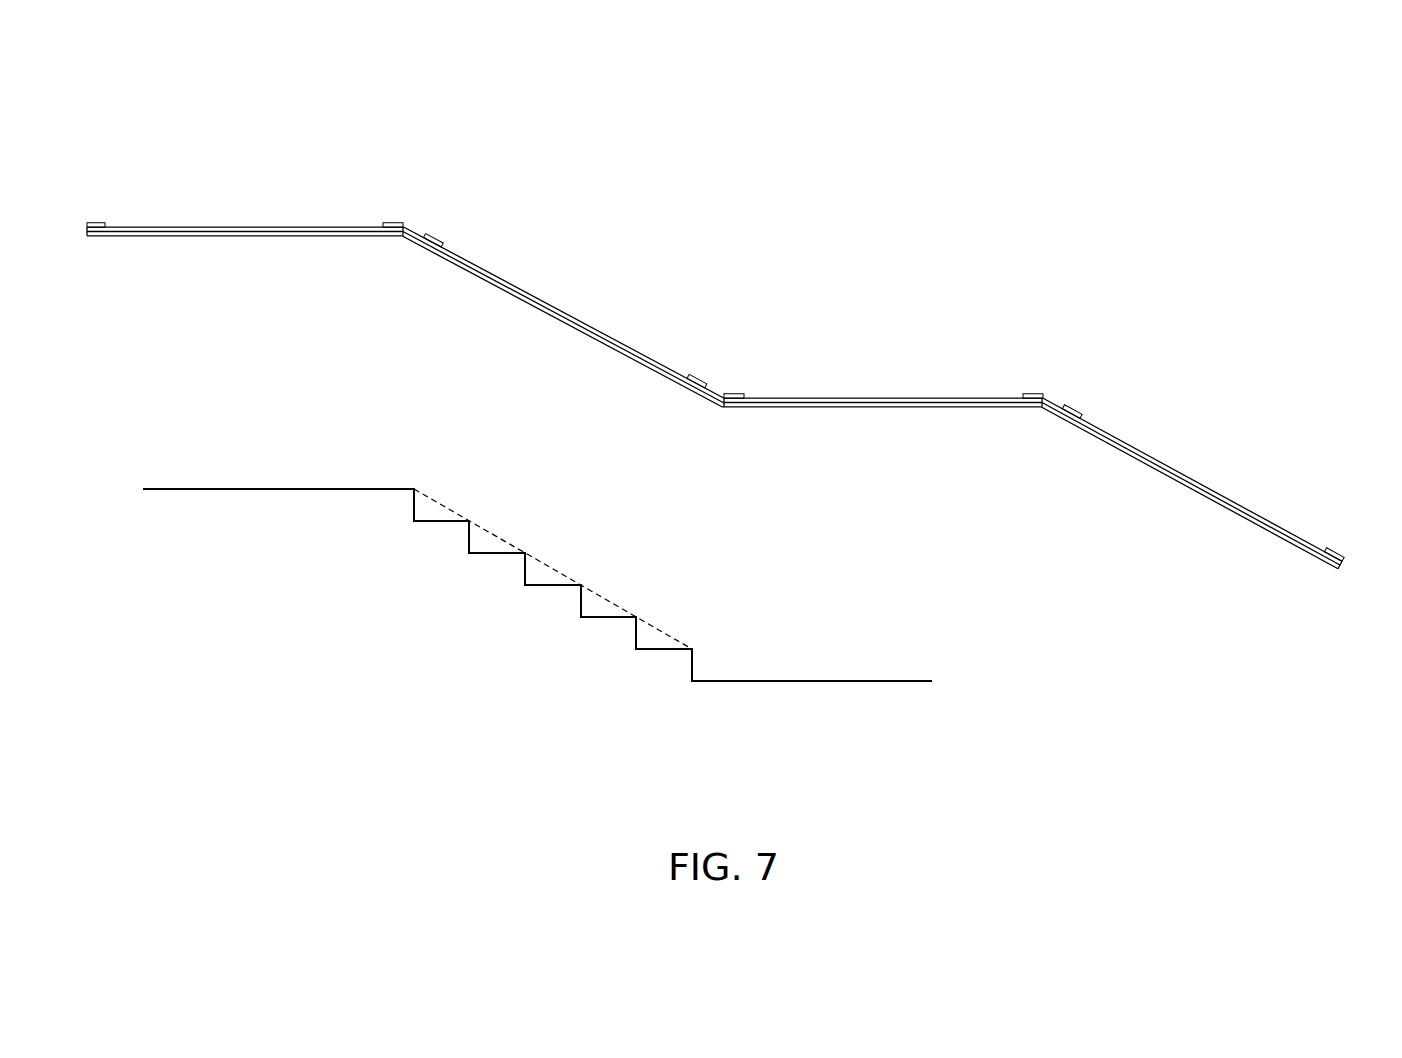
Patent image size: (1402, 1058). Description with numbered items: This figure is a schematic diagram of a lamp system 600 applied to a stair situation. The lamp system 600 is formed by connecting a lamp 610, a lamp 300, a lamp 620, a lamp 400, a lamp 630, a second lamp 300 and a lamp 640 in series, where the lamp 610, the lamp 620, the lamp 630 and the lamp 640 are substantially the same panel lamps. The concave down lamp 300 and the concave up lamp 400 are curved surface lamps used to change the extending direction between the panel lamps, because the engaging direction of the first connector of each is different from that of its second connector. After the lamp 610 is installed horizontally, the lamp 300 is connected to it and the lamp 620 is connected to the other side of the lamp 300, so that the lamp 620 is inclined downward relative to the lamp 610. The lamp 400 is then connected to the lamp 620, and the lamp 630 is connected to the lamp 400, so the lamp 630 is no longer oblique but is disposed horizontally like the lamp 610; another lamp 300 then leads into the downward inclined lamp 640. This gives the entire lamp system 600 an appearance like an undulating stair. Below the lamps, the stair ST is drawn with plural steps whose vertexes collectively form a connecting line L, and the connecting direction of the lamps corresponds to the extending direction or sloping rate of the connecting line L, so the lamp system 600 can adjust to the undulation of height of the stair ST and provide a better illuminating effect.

The lamp system 600 is at (105, 92).
The lamp 610 is at (233, 223).
The lamp 620 is at (563, 307).
The lamp 630 is at (885, 393).
The lamp 640 is at (1197, 475).
The lamp 300 is at (418, 218).
The lamp 400 is at (718, 388).
The stair ST is at (366, 505).
The connecting line L is at (451, 508).